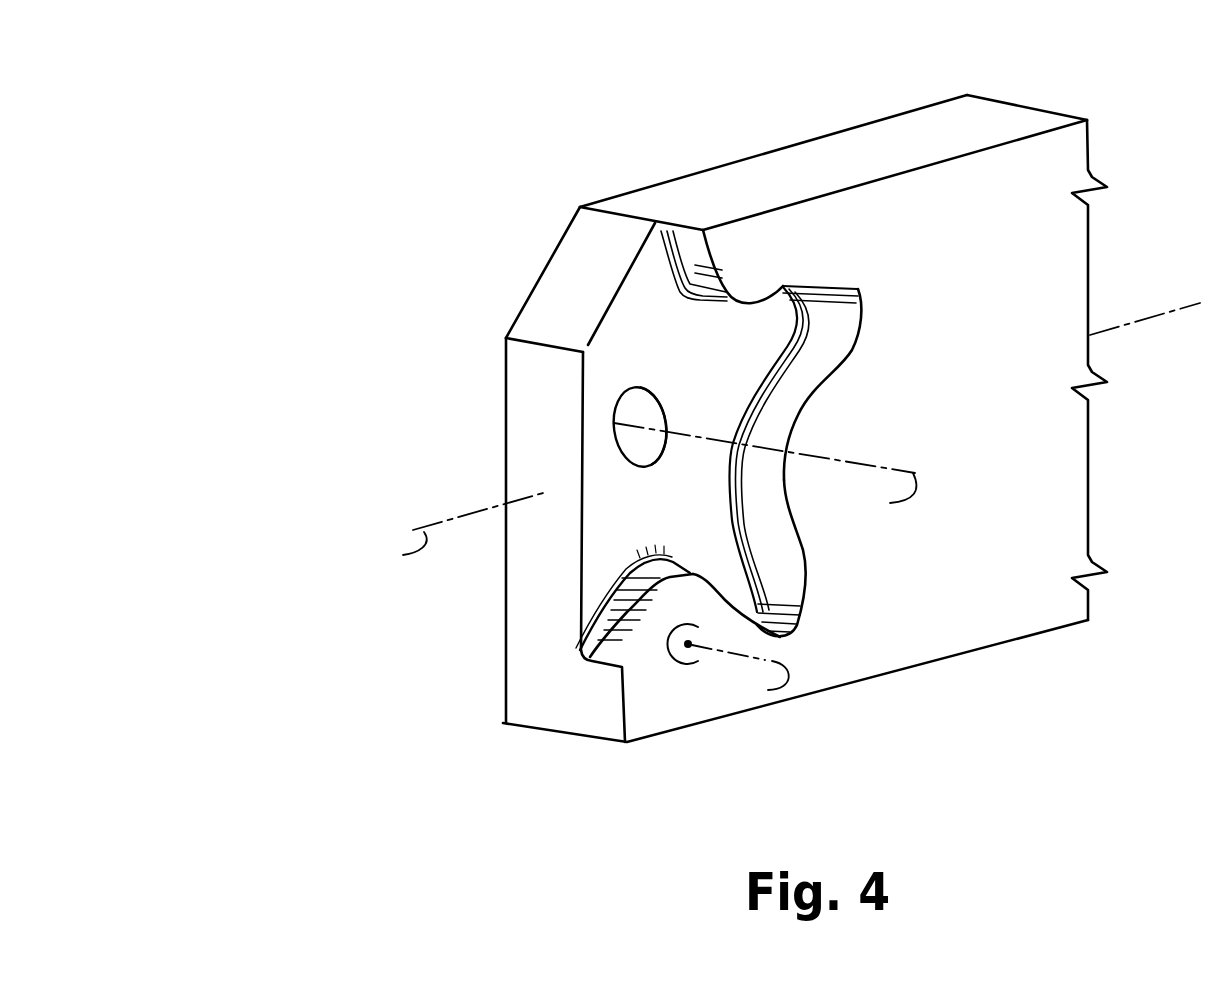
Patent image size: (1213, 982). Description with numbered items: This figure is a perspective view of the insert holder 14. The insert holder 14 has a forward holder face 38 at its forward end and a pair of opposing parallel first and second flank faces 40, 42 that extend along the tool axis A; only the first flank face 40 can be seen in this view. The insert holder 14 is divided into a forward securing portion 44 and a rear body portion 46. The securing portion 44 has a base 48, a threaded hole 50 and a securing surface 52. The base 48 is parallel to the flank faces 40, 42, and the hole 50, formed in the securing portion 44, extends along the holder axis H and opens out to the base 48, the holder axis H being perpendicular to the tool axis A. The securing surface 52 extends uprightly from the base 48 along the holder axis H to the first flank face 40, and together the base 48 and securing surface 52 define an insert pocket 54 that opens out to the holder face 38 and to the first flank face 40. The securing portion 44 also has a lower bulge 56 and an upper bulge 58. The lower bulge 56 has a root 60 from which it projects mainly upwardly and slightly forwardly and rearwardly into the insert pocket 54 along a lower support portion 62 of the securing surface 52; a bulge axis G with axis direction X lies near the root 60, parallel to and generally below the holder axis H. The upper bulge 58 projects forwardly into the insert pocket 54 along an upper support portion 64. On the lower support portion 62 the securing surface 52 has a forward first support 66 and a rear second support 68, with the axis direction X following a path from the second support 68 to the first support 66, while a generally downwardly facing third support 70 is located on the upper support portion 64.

The insert holder 14 is at (314, 131).
The holder face 38 is at (550, 397).
The first flank face 40 is at (1063, 262).
The second flank face 42 is at (886, 117).
The securing portion 44 is at (651, 176).
The body portion 46 is at (962, 91).
The base 48 is at (615, 507).
The threaded hole 50 is at (638, 408).
The securing surface 52 is at (758, 483).
The insert pocket 54 is at (632, 332).
The lower bulge 56 is at (658, 694).
The upper bulge 58 is at (745, 256).
The root 60 is at (692, 682).
The lower support portion 62 is at (720, 568).
The upper support portion 64 is at (800, 328).
The first support 66 is at (618, 580).
The second support 68 is at (720, 592).
The third support 70 is at (752, 300).